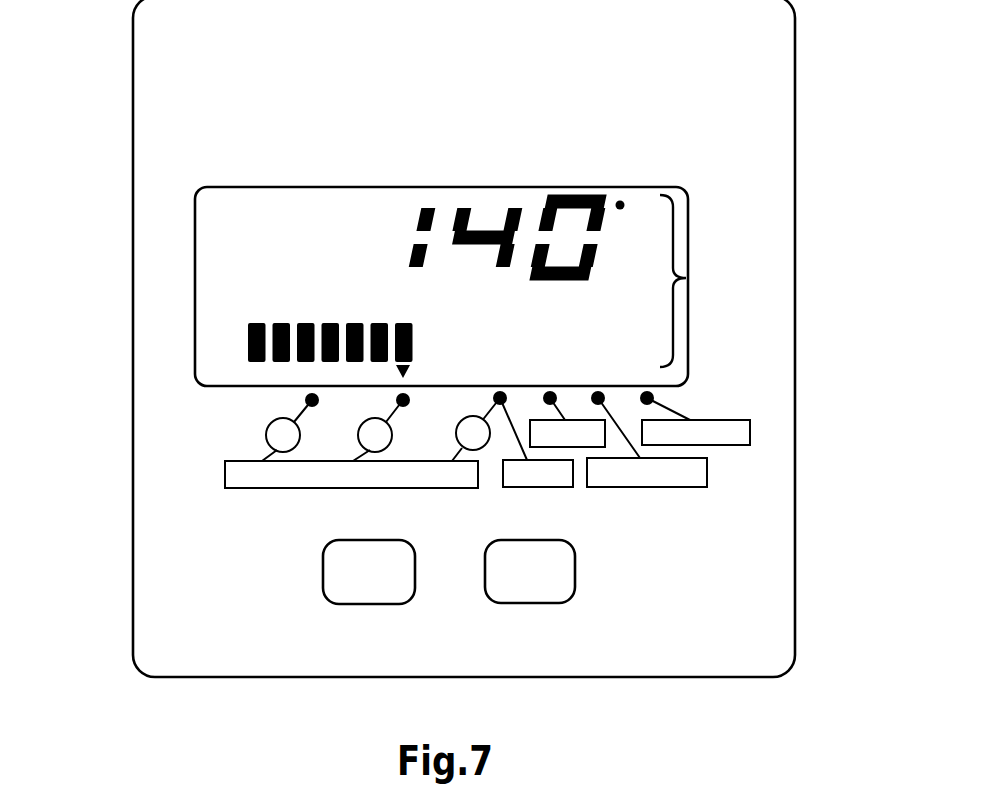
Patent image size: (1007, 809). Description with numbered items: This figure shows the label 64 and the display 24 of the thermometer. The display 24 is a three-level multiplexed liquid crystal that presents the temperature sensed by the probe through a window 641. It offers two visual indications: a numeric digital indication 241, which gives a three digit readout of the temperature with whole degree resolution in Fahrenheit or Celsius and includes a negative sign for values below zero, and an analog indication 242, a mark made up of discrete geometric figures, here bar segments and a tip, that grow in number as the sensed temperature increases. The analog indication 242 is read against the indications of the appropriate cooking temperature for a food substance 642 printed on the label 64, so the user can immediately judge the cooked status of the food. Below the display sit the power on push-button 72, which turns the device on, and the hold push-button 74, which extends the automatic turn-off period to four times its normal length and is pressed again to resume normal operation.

The display 24 is at (459, 249).
The numeric digital indication 241 is at (580, 195).
The analog indication 242 is at (248, 338).
The label 64 is at (797, 353).
The window 641 is at (688, 210).
The indication of the appropriate cooking temperature for a food substance 642 is at (757, 395).
The power on push-button 72 is at (575, 573).
The hold push-button 74 is at (365, 605).